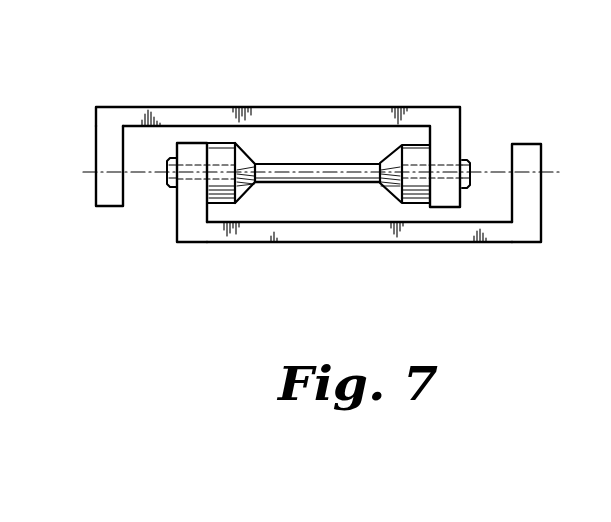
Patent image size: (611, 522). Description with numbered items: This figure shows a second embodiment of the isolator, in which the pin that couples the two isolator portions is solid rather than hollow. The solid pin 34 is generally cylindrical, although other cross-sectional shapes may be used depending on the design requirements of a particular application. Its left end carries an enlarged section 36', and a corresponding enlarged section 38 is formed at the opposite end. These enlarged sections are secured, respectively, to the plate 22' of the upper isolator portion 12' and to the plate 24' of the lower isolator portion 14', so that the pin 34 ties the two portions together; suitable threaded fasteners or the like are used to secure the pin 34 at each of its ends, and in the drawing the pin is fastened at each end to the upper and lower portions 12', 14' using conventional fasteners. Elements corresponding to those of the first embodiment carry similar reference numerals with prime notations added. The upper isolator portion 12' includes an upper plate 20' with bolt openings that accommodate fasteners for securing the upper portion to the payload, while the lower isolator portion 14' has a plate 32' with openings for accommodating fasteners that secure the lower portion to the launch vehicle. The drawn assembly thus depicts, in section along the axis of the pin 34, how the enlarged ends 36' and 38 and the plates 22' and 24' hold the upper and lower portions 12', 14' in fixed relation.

The upper isolator portion 12' is at (359, 271).
The lower isolator portion 14' is at (278, 123).
The upper plate 20' is at (549, 232).
The lower plate of the upper isolator portion 22' is at (147, 218).
The plate of the lower isolator portion 24' is at (477, 240).
The plate of the lower portion 32' is at (78, 145).
The solid pin 34 is at (306, 167).
The enlarged section 36' is at (211, 121).
The enlarged section 38 is at (391, 163).